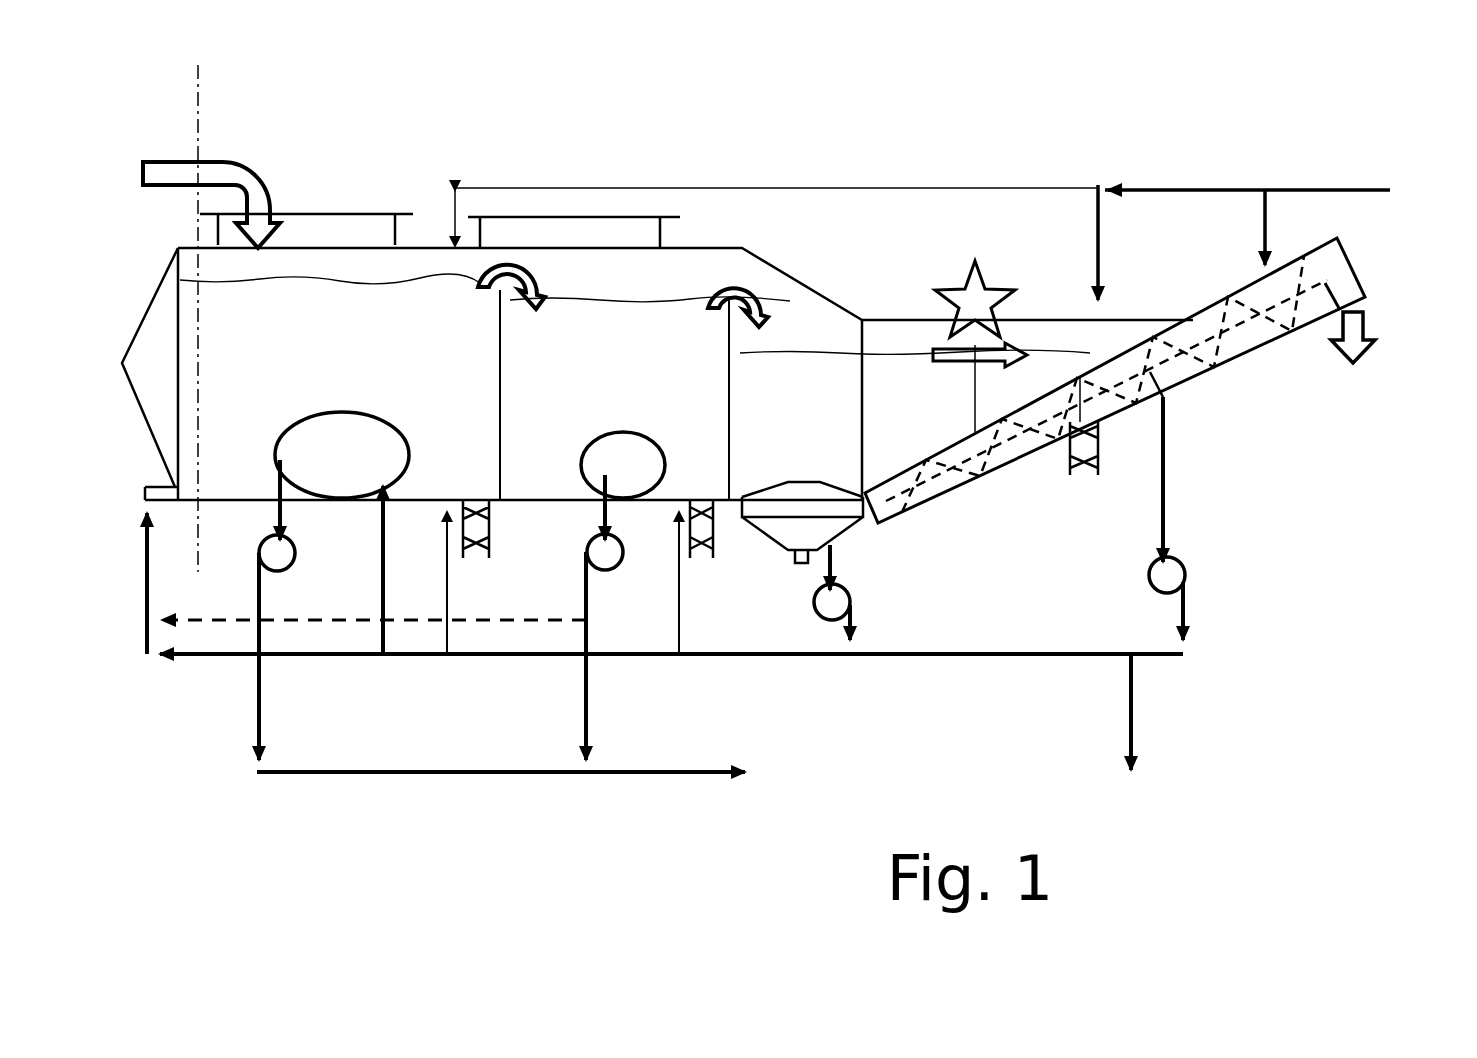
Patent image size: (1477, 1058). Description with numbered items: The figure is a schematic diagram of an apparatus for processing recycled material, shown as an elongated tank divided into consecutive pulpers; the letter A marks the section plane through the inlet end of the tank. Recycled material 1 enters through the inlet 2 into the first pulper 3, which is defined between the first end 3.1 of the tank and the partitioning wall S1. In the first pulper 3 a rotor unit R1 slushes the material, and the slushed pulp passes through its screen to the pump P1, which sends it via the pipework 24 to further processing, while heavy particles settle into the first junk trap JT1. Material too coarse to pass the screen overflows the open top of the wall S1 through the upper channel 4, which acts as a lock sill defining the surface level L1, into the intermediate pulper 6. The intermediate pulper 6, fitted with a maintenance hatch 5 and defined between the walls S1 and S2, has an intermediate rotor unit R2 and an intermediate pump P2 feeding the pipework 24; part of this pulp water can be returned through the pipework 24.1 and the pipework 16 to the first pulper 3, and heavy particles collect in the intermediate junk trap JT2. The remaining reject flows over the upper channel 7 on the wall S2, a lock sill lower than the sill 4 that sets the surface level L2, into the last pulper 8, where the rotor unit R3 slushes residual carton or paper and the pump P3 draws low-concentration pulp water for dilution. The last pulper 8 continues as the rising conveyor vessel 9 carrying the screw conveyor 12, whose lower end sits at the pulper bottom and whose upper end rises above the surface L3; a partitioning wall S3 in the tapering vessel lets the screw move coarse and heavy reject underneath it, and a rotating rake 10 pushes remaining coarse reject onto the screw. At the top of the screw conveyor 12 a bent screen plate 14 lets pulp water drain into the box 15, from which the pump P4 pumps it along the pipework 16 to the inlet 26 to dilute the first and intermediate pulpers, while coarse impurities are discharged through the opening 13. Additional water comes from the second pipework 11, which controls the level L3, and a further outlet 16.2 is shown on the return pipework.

The recycled material 1 is at (236, 185).
The inlet 2 is at (290, 225).
The first pulper 3 is at (669, 374).
The first end of the tank 3.1 is at (140, 335).
The upper channel 4 is at (490, 262).
The maintenance hatch 5 is at (572, 228).
The intermediate pulper 6 is at (650, 350).
The upper channel 7 is at (727, 270).
The last pulper 8 is at (915, 376).
The conveyor vessel 9 is at (925, 390).
The rotating rake 10 is at (970, 258).
The second pipework 11 is at (457, 190).
The screw conveyor 12 is at (1347, 280).
The opening 13 is at (1362, 300).
The screen plate 14 is at (1290, 327).
The box 15 is at (1197, 377).
The pipework 16 is at (1175, 493).
The outlet 16.2 is at (1134, 748).
The pipework 24 is at (250, 775).
The pipework 24.1 is at (230, 624).
The inlet 26 is at (158, 487).
The section plane A is at (190, 93).
The surface level of the first pulper L1 is at (432, 280).
The surface level of the intermediate pulper L2 is at (676, 300).
The surface level of the last pulper L3 is at (1025, 350).
The pump P1 is at (290, 575).
The intermediate pump P2 is at (615, 570).
The pump P3 is at (828, 620).
The pump P4 is at (1180, 580).
The rotor unit R1 is at (318, 466).
The intermediate rotor unit R2 is at (638, 480).
The rotor unit R3 is at (847, 528).
The partitioning wall S1 is at (505, 385).
The partitioning wall S2 is at (733, 400).
The partitioning wall S3 is at (975, 433).
The first junk trap JT1 is at (478, 553).
The intermediate junk trap JT2 is at (1083, 478).